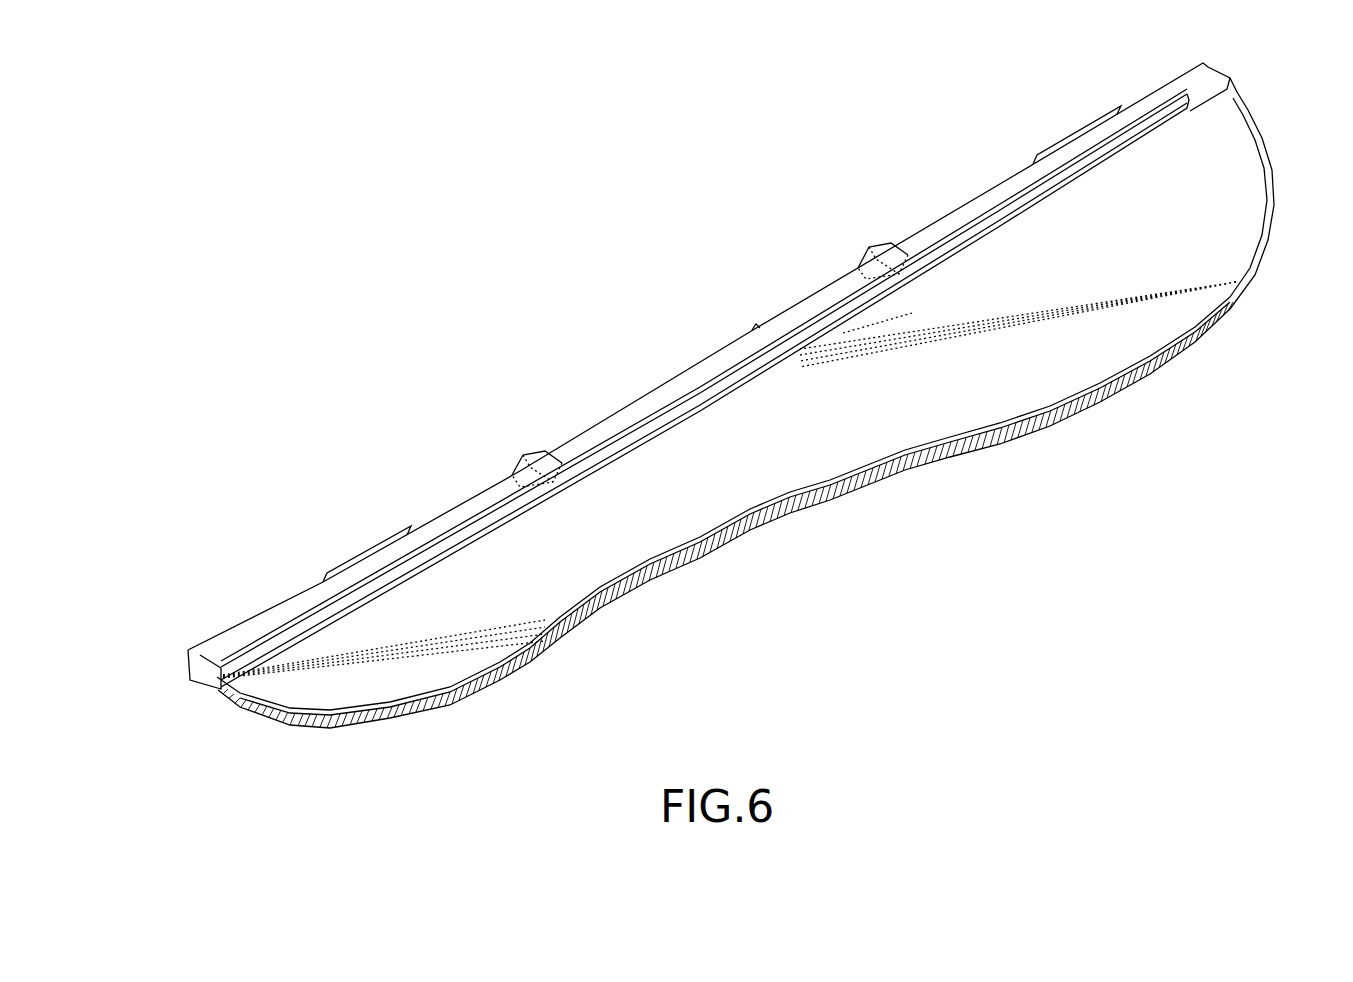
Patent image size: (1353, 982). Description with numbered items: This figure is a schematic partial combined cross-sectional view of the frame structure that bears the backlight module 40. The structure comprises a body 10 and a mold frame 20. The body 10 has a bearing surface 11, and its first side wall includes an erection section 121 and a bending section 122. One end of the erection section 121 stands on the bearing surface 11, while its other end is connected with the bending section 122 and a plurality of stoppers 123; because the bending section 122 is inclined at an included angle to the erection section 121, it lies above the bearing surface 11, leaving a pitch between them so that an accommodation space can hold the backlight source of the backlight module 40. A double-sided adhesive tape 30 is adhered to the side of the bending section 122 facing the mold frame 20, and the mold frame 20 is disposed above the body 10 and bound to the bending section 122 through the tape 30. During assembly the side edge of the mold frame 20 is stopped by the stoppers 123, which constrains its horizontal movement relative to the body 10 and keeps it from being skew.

The body 10 is at (288, 730).
The bearing surface 11 is at (202, 686).
The mold frame 20 is at (278, 590).
The double-sided adhesive tape 30 is at (362, 548).
The backlight module 40 is at (1268, 132).
The erection section 121 is at (187, 668).
The bending section 122 is at (388, 582).
The stoppers 123 is at (530, 456).